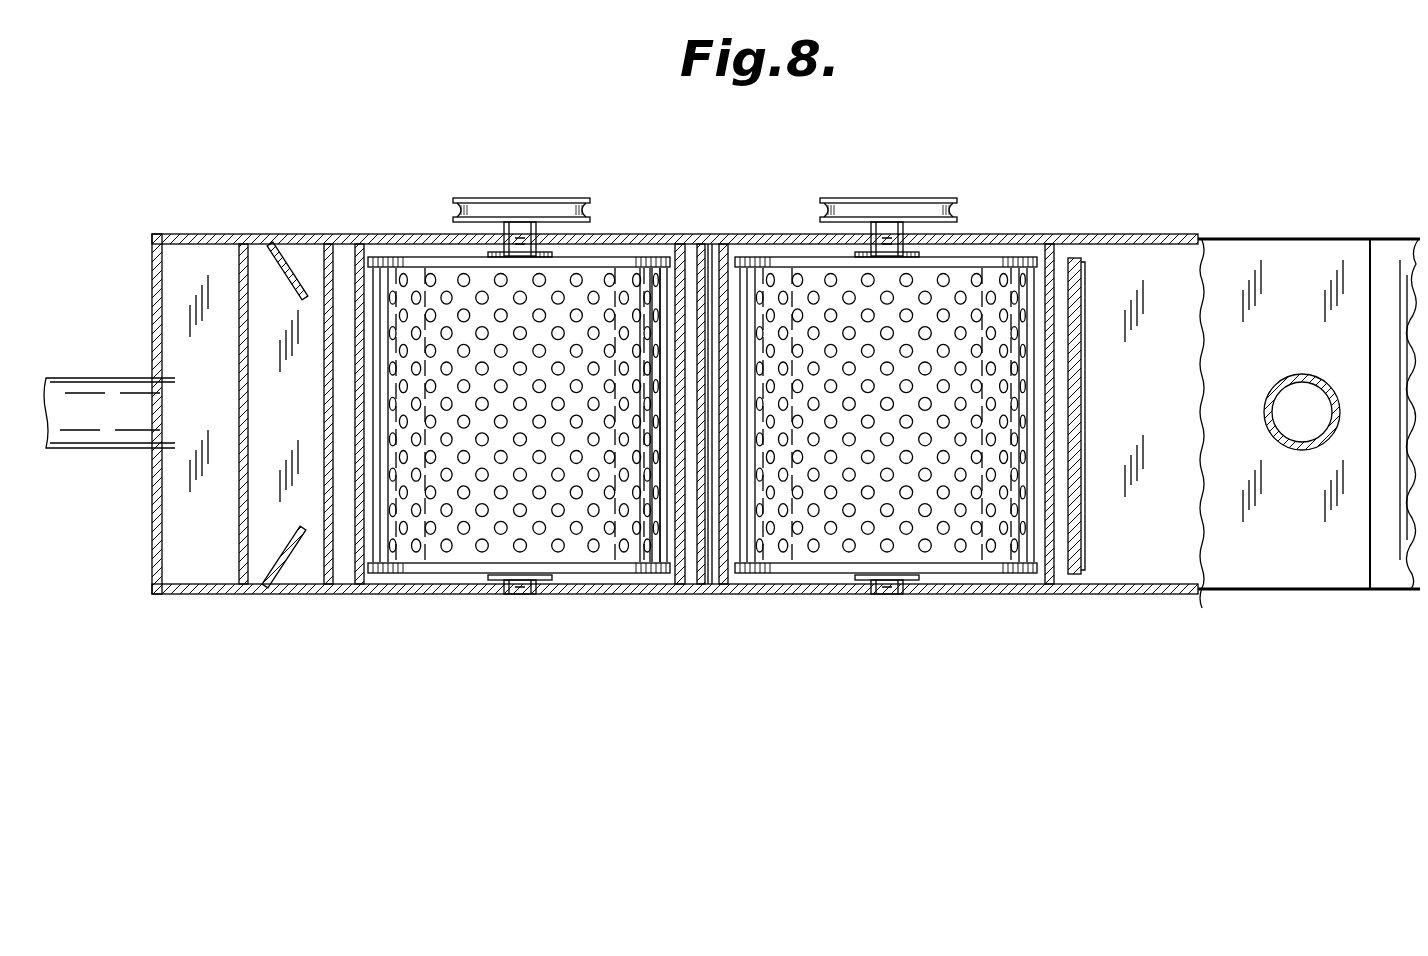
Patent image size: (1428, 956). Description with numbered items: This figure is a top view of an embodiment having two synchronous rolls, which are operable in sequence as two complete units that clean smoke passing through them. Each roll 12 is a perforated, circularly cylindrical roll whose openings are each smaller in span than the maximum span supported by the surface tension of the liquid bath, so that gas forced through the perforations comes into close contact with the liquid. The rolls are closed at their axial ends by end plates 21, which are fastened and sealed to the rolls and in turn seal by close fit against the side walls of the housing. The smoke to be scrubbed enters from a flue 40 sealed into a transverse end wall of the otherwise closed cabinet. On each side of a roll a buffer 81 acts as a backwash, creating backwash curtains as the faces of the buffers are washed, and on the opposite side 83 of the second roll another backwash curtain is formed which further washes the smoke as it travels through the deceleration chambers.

The roll 12 is at (641, 263).
The end plate 21 is at (410, 257).
The flue 40 is at (93, 380).
The buffer 81 is at (353, 338).
The opposite side 83 is at (1057, 253).